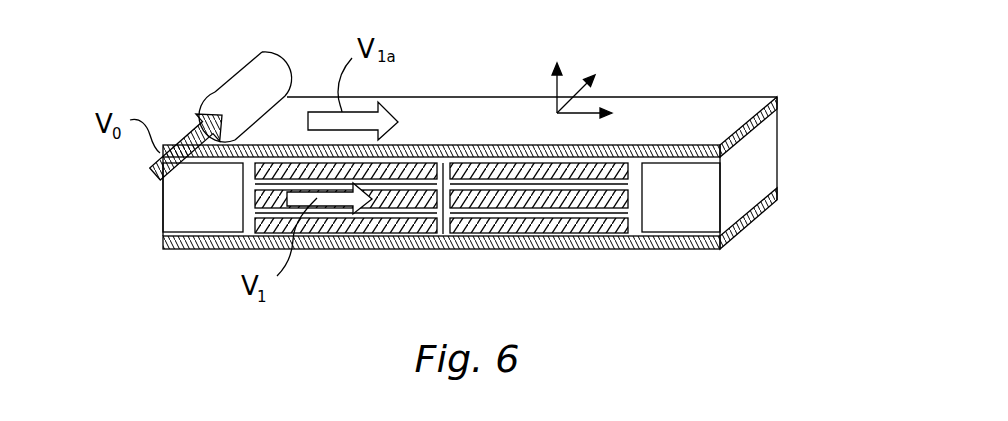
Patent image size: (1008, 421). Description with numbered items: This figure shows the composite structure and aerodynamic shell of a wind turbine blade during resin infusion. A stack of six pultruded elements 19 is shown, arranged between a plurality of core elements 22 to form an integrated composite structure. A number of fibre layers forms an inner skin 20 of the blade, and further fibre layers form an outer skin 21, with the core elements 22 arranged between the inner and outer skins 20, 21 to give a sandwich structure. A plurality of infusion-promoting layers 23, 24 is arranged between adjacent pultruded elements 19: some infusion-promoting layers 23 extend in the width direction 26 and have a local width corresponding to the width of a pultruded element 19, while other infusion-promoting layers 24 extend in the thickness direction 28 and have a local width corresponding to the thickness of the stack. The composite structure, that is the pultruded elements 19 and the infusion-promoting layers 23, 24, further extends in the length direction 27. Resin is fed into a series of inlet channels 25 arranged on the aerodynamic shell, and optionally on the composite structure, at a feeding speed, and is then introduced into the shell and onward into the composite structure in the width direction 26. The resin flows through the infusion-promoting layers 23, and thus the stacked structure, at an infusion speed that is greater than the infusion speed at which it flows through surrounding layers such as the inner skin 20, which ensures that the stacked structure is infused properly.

The pultruded elements 19 is at (422, 158).
The inner skin 20 is at (727, 108).
The outer skin 21 is at (712, 250).
The core elements 22 is at (187, 203).
The infusion-promoting layers 23 is at (360, 185).
The infusion-promoting layers 24 is at (443, 248).
The inlet channels 25 is at (245, 82).
The width direction 26 is at (603, 123).
The length direction 27 is at (603, 92).
The thickness direction 28 is at (563, 82).